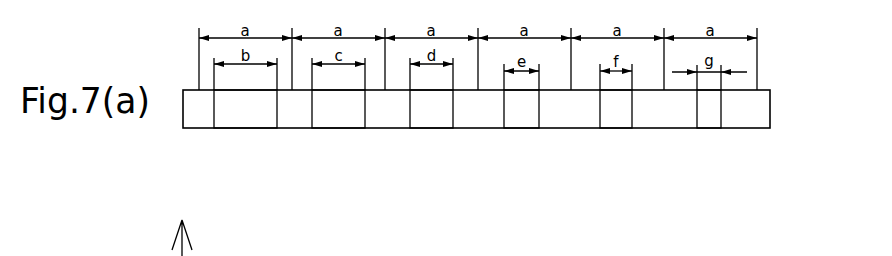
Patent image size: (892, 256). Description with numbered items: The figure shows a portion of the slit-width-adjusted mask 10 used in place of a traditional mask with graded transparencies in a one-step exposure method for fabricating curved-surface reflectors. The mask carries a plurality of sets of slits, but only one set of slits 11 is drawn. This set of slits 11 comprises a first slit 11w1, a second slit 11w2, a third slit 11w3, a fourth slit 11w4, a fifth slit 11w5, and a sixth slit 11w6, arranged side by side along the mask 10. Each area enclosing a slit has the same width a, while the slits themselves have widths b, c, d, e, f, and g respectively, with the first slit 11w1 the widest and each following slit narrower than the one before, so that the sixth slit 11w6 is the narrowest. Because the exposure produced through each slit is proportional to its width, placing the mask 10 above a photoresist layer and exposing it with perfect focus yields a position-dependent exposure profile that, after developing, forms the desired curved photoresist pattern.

The slit-width-adjusted mask 10 is at (765, 109).
The set of slits 11 is at (467, 170).
The first slit 11w1 is at (247, 112).
The second slit 11w2 is at (347, 112).
The third slit 11w3 is at (445, 112).
The fourth slit 11w4 is at (520, 112).
The fifth slit 11w5 is at (595, 112).
The sixth slit 11w6 is at (667, 112).